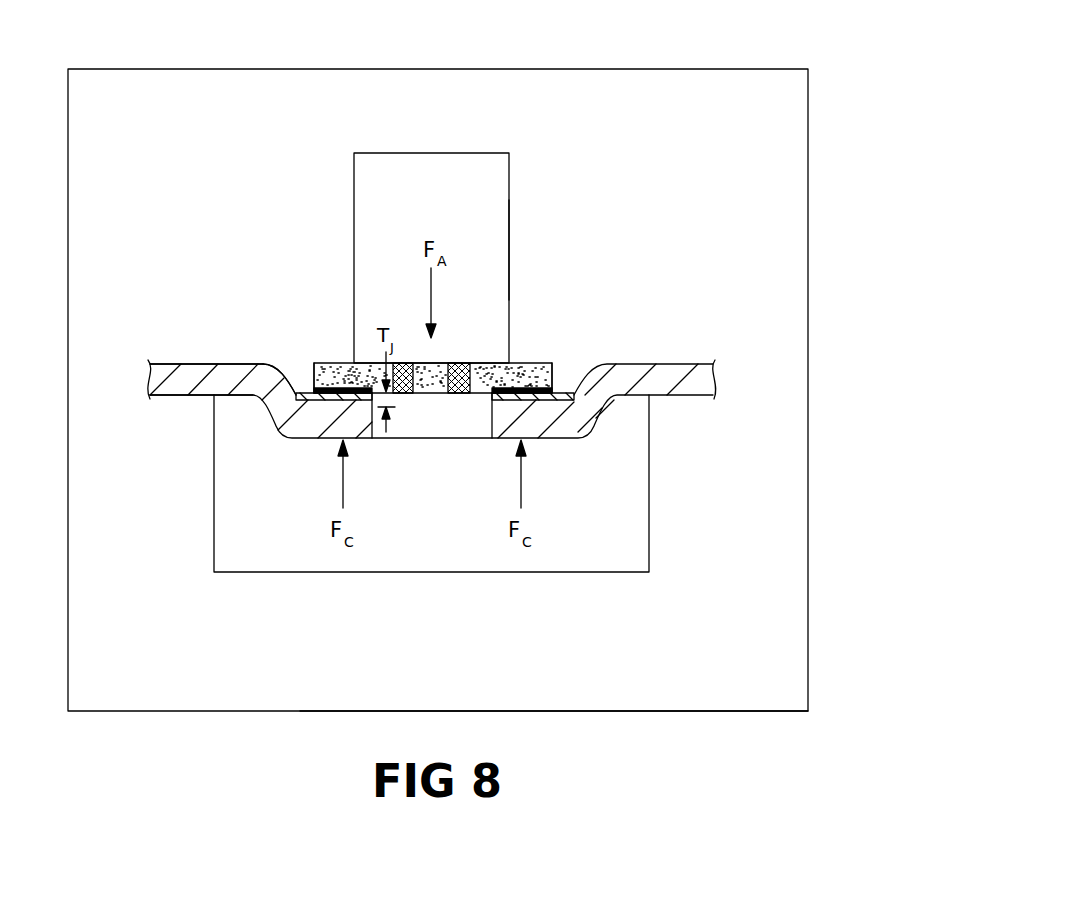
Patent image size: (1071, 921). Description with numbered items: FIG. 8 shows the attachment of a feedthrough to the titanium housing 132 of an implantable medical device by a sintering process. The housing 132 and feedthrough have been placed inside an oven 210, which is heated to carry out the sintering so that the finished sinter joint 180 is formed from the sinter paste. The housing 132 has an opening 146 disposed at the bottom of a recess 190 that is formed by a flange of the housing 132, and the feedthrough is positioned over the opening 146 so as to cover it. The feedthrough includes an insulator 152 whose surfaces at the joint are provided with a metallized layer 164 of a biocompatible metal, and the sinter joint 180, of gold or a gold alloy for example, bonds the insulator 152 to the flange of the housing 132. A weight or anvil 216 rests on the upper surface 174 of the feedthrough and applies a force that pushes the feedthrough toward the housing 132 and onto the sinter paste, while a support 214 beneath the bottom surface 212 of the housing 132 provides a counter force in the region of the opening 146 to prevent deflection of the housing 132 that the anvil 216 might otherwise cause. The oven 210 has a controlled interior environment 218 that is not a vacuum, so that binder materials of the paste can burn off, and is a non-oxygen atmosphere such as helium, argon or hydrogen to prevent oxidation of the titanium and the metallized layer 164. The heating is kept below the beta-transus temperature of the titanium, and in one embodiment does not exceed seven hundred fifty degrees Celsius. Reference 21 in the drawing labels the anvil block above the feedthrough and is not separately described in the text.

The oven 210 is at (686, 69).
The controlled interior environment 218 is at (650, 688).
The actuator 21 is at (510, 222).
The anvil 216 is at (510, 266).
The upper surface 174 is at (333, 362).
The insulator 152 is at (313, 363).
The metallized layer 164 is at (556, 388).
The sinter joint 180 is at (566, 388).
The housing 132 is at (688, 364).
The bottom surface 212 is at (173, 397).
The recess 190 is at (294, 374).
The opening 146 is at (440, 440).
The support 214 is at (650, 480).